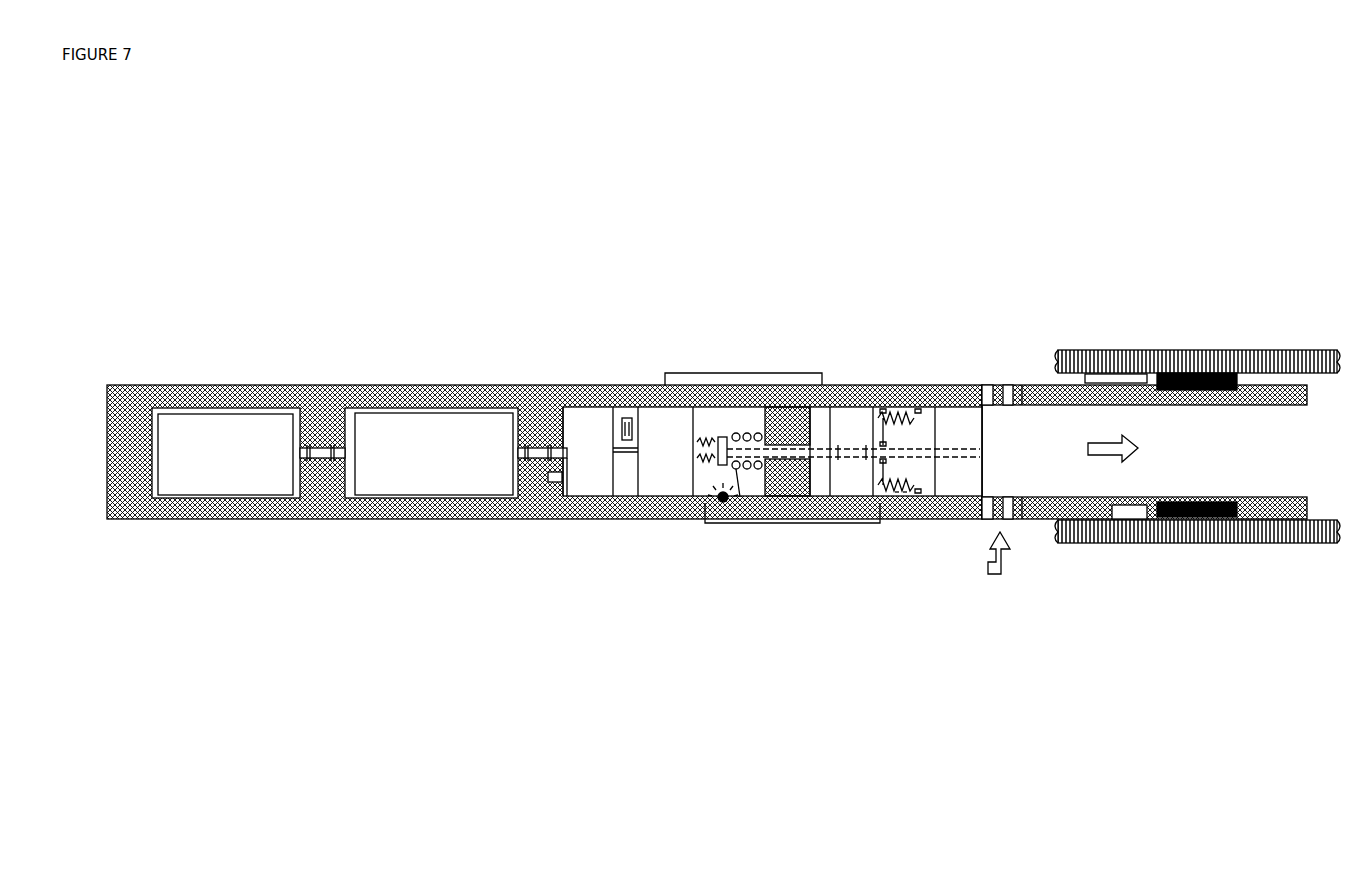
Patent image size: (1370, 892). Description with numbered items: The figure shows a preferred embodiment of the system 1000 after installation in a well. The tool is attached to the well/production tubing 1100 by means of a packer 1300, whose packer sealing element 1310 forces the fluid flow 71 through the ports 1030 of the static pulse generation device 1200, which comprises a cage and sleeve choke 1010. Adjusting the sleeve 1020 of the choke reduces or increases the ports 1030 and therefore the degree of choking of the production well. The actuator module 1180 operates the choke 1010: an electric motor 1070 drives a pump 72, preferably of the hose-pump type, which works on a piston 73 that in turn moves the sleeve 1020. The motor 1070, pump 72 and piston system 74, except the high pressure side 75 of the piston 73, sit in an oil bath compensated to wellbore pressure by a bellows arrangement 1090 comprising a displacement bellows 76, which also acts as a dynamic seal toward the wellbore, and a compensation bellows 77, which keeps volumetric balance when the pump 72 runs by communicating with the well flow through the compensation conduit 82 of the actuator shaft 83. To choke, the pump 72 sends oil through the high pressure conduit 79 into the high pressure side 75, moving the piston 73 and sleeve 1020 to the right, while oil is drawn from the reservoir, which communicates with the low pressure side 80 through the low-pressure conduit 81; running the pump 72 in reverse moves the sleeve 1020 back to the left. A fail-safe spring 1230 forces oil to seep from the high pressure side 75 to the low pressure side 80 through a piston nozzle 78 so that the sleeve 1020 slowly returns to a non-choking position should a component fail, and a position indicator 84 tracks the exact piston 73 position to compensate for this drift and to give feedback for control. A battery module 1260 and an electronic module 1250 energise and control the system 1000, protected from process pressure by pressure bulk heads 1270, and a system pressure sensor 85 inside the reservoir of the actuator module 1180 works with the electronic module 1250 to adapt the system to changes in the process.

The system 1000 is at (838, 325).
The battery module 1260 is at (222, 450).
The electronic module 1250 is at (420, 450).
The pressure bulk heads 1270 is at (535, 445).
The system pressure sensor 85 is at (556, 490).
The electric motor 1070 is at (593, 425).
The pump 72 is at (652, 442).
The compensation bellows 77 is at (704, 440).
The actuator shaft 83 is at (790, 420).
The low-pressure conduit 81 is at (761, 525).
The compensation conduit 82 is at (820, 420).
The high pressure conduit 79 is at (797, 373).
The actuator module 1180 is at (812, 312).
The static pulse generation device 1200 is at (862, 318).
The piston system 74 is at (877, 380).
The bellows arrangement 1090 is at (902, 366).
The sleeve 1020 is at (948, 428).
The cage and sleeve choke 1010 is at (988, 375).
The well/production tubing 1100 is at (1147, 350).
The packer sealing element 1310 is at (1233, 352).
The fluid flow 71 is at (1085, 372).
The packer 1300 is at (1320, 387).
The ports 1030 is at (1018, 528).
The fail-safe spring 1230 is at (738, 508).
The position indicator 84 is at (698, 520).
The high pressure side 75 is at (812, 527).
The piston nozzle 78 is at (857, 523).
The piston 73 is at (873, 523).
The low pressure side 80 is at (900, 510).
The displacement bellows 76 is at (903, 530).